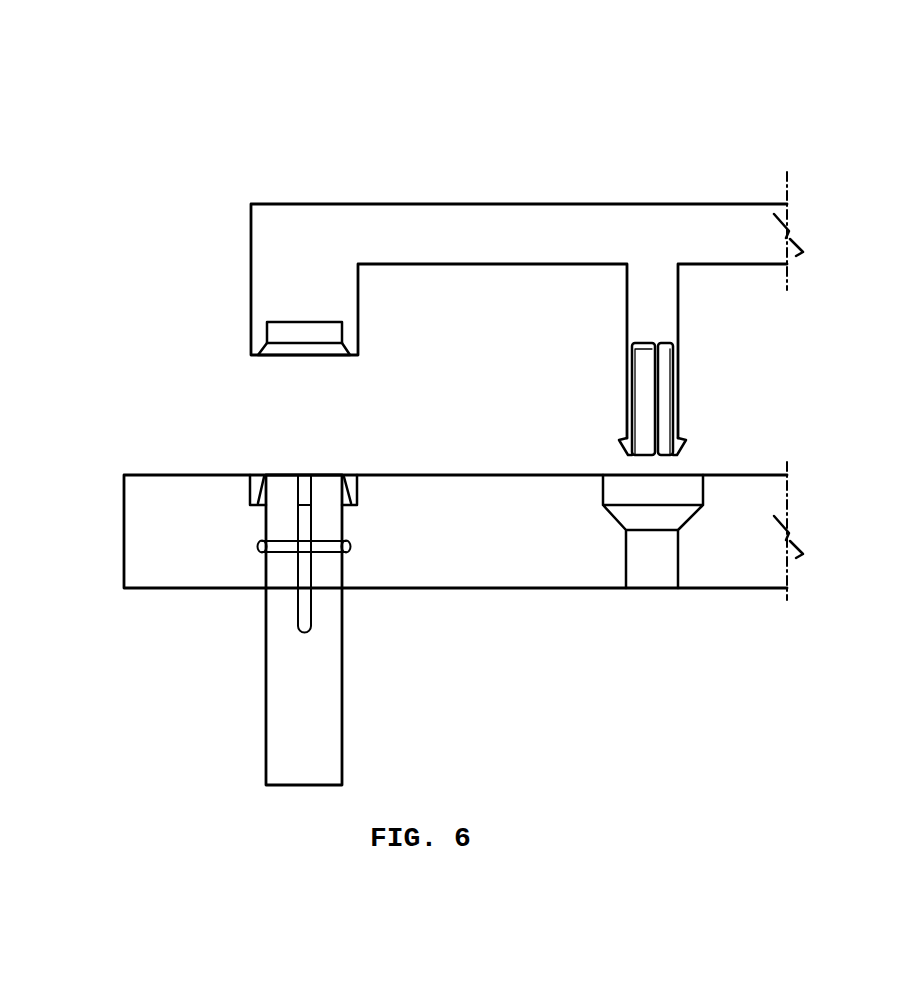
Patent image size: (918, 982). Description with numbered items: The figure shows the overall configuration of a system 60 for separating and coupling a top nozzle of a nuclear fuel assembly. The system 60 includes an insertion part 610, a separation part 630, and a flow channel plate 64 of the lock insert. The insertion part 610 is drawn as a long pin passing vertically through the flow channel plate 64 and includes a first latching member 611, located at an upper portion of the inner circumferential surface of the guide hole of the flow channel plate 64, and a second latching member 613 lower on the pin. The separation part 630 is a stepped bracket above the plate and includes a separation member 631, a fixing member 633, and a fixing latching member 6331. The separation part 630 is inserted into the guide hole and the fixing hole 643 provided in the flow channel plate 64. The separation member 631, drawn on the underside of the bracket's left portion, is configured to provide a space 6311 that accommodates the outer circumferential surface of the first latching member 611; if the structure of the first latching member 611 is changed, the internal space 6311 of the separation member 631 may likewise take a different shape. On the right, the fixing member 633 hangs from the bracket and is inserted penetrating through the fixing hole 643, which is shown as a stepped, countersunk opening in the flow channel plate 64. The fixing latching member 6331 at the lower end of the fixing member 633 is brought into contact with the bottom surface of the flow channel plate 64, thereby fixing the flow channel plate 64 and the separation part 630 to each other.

The system 60 is at (240, 119).
The separation part 630 is at (484, 215).
The separation member 631 is at (325, 337).
The space 6311 is at (278, 347).
The fixing member 633 is at (668, 375).
The fixing latching member 6331 is at (688, 441).
The flow channel plate 64 is at (138, 546).
The fixing hole 643 is at (645, 583).
The insertion part 610 is at (272, 660).
The first latching member 611 is at (258, 495).
The second latching member 613 is at (332, 550).